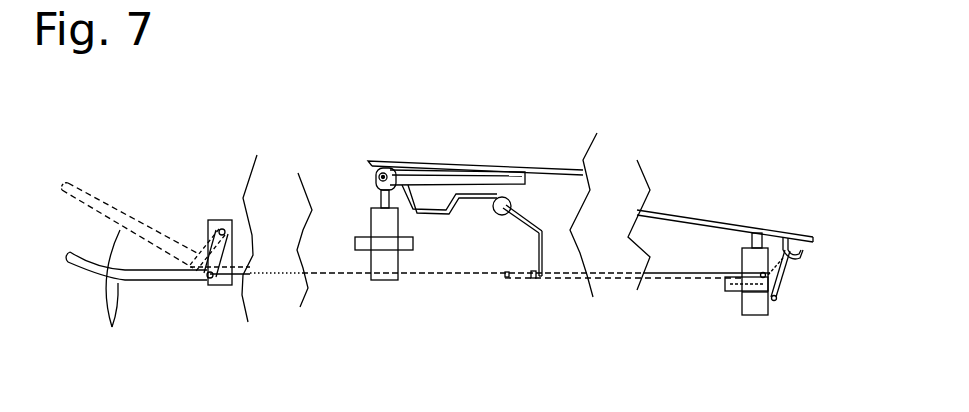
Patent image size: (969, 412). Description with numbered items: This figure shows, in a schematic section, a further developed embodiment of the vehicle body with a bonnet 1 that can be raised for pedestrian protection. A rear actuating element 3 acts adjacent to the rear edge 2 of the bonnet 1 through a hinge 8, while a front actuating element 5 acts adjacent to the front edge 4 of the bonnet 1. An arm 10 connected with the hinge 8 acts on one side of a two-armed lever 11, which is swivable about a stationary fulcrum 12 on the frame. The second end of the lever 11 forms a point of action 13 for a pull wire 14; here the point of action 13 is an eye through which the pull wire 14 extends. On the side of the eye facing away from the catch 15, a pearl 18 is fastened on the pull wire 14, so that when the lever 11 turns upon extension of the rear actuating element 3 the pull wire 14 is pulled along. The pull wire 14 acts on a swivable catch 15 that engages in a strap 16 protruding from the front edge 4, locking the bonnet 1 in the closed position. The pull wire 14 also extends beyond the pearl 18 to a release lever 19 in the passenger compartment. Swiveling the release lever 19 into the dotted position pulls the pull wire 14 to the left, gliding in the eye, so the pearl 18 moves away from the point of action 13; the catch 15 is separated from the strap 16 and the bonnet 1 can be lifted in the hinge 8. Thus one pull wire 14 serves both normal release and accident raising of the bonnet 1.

The bonnet 1 is at (538, 168).
The rear edge 2 is at (372, 163).
The actuating element 3 is at (375, 228).
The front edge 4 is at (813, 238).
The actuating element 5 is at (753, 312).
The hinge 8 is at (386, 172).
The arm 10 is at (380, 197).
The lever 11 is at (520, 228).
The fulcrum 12 is at (497, 212).
The point of action 13 is at (542, 278).
The pull wire 14 is at (322, 275).
The catch 15 is at (788, 270).
The strap 16 is at (800, 250).
The pearl 18 is at (508, 278).
The release lever 19 is at (146, 278).